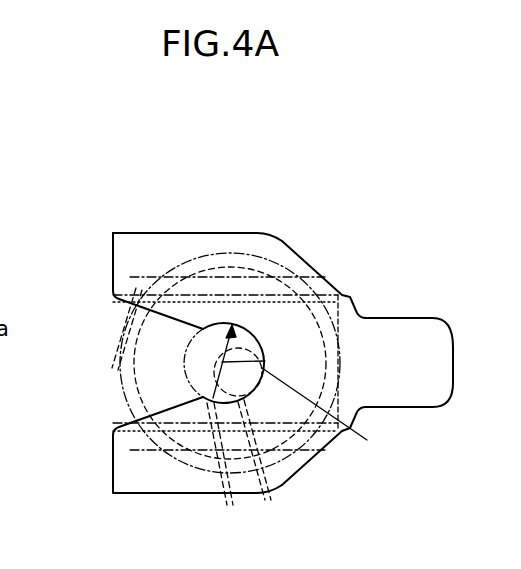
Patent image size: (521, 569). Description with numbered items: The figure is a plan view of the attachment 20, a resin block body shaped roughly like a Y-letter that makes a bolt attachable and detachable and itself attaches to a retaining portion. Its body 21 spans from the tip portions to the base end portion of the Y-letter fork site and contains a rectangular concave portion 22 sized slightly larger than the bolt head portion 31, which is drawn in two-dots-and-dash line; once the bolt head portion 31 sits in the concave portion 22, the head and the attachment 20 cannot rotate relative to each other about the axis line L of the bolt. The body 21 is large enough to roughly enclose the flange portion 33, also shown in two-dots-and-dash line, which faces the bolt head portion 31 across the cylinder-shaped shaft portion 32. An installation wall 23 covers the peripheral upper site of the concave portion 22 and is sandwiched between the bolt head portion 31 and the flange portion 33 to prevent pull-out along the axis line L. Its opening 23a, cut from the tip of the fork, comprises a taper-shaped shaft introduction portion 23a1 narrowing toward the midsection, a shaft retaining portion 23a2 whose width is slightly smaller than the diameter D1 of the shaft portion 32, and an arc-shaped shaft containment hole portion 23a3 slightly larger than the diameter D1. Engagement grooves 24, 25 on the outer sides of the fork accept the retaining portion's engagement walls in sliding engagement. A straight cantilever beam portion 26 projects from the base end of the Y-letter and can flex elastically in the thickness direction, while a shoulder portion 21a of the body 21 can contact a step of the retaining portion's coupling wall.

The attachment 20 is at (226, 223).
The body 21 is at (262, 228).
The shoulder portion 21a is at (394, 410).
The concave portion 22 is at (165, 322).
The installation wall 23 is at (317, 340).
The opening 23a is at (112, 303).
The shaft introduction portion 23a1 is at (112, 420).
The shaft retaining portion 23a2 is at (236, 473).
The shaft containment hole portion 23a3 is at (276, 510).
The engagement groove 24 is at (133, 259).
The engagement groove 25 is at (110, 472).
The beam portion 26 is at (436, 342).
The bolt head portion 31 is at (343, 286).
The shaft portion 32 is at (183, 366).
The flange portion 33 is at (307, 435).
The axis line L is at (324, 410).
The diameter D1 is at (270, 405).